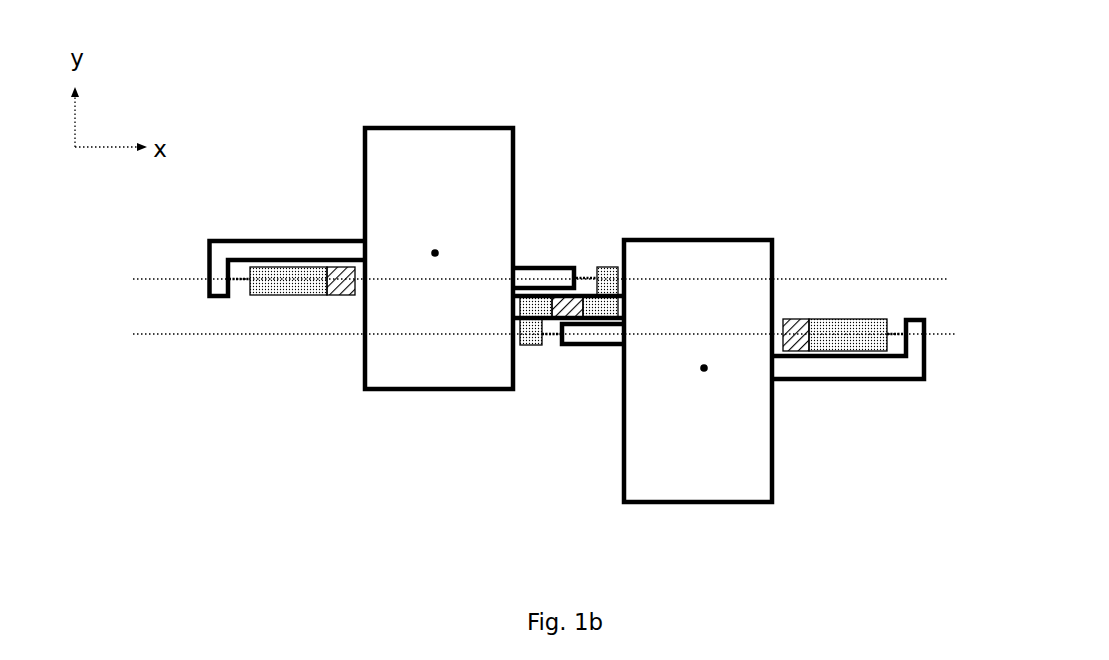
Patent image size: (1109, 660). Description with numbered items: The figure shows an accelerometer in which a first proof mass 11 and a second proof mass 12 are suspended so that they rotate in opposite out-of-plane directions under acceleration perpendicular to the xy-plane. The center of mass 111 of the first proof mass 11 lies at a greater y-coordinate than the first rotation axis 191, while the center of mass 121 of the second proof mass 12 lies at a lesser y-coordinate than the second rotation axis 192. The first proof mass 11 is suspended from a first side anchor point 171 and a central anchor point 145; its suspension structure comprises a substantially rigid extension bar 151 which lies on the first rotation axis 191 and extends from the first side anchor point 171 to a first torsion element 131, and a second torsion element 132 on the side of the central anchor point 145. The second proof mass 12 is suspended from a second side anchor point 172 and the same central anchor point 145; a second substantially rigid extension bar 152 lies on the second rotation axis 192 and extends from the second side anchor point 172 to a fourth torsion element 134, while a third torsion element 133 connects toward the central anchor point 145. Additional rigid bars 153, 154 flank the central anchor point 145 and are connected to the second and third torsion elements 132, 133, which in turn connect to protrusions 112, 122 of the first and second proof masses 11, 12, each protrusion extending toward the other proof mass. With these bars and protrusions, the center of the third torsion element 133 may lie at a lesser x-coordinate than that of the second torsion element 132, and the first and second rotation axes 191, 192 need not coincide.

The first proof mass 11 is at (222, 251).
The center of mass of the first proof mass 111 is at (426, 241).
The protrusion of the first proof mass 112 is at (540, 271).
The second proof mass 12 is at (695, 255).
The center of mass of the second proof mass 121 is at (694, 383).
The protrusion of the second proof mass 122 is at (599, 345).
The first torsion element 131 is at (243, 288).
The second torsion element 132 is at (588, 274).
The third torsion element 133 is at (549, 342).
The fourth torsion element 134 is at (894, 327).
The central anchor point 145 is at (562, 302).
The first extension bar 151 is at (269, 277).
The second extension bar 152 is at (865, 339).
The additional rigid bar 153 is at (615, 303).
The additional rigid bar 154 is at (532, 306).
The first side anchor point 171 is at (327, 269).
The second side anchor point 172 is at (805, 351).
The first rotation axis 191 is at (514, 279).
The second rotation axis 192 is at (517, 334).